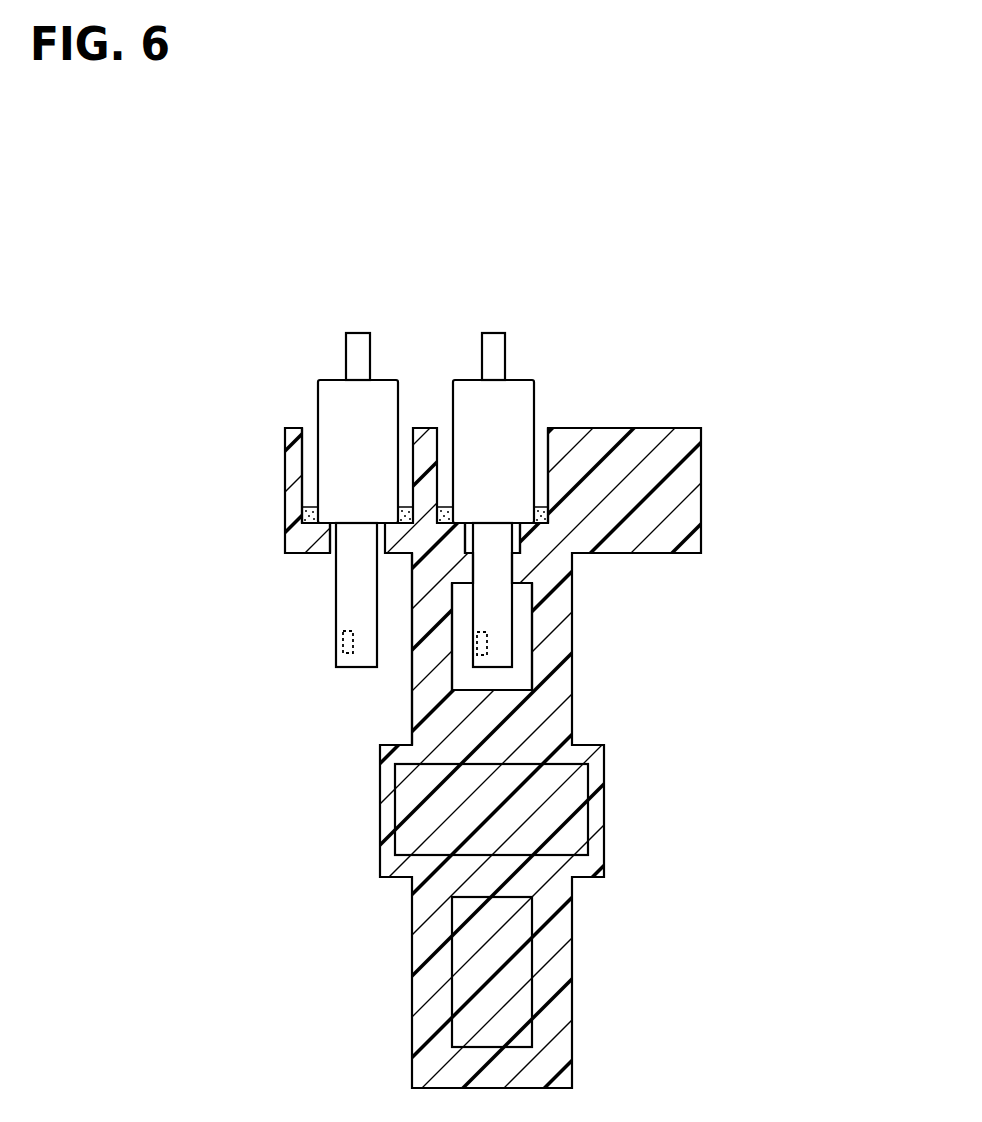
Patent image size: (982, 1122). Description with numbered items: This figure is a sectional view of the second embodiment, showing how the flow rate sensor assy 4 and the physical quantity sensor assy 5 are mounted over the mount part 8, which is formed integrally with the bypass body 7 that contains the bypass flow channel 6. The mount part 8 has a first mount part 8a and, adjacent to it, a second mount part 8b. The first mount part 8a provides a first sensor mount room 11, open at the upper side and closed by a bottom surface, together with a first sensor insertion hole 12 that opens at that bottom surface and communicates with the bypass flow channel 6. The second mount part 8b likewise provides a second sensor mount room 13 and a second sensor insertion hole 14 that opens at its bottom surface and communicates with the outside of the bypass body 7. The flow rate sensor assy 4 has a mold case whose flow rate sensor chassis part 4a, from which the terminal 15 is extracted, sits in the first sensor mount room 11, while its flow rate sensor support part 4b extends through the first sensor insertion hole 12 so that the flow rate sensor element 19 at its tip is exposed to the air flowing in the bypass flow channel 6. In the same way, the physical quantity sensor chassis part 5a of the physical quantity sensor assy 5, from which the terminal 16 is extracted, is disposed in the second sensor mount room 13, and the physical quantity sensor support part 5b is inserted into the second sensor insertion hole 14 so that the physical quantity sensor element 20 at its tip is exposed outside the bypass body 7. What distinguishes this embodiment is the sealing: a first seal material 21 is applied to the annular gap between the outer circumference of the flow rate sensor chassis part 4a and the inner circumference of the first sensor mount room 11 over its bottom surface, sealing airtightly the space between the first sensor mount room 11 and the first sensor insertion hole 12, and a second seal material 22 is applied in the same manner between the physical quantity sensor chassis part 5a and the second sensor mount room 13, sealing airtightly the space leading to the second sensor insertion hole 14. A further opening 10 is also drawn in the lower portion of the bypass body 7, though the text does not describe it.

The flow rate sensor assy 4 is at (544, 466).
The flow rate sensor chassis part 4a is at (514, 388).
The flow rate sensor support part 4b is at (500, 617).
The physical quantity sensor assy 5 is at (322, 481).
The physical quantity sensor chassis part 5a is at (336, 388).
The physical quantity sensor support part 5b is at (350, 605).
The bypass flow channel 6 is at (505, 792).
The bypass body 7 is at (430, 718).
The mount part 8 is at (662, 462).
The first mount part 8a is at (538, 537).
The second mount part 8b is at (315, 536).
The lower opening 10 is at (510, 987).
The first sensor mount room 11 is at (540, 445).
The first sensor insertion hole 12 is at (518, 541).
The second sensor mount room 13 is at (310, 440).
The second sensor insertion hole 14 is at (334, 548).
The terminal 15 is at (496, 342).
The terminal 16 is at (358, 342).
The flow rate sensor element 19 is at (477, 645).
The physical quantity sensor element 20 is at (340, 645).
The first seal material 21 is at (550, 515).
The second seal material 22 is at (312, 514).